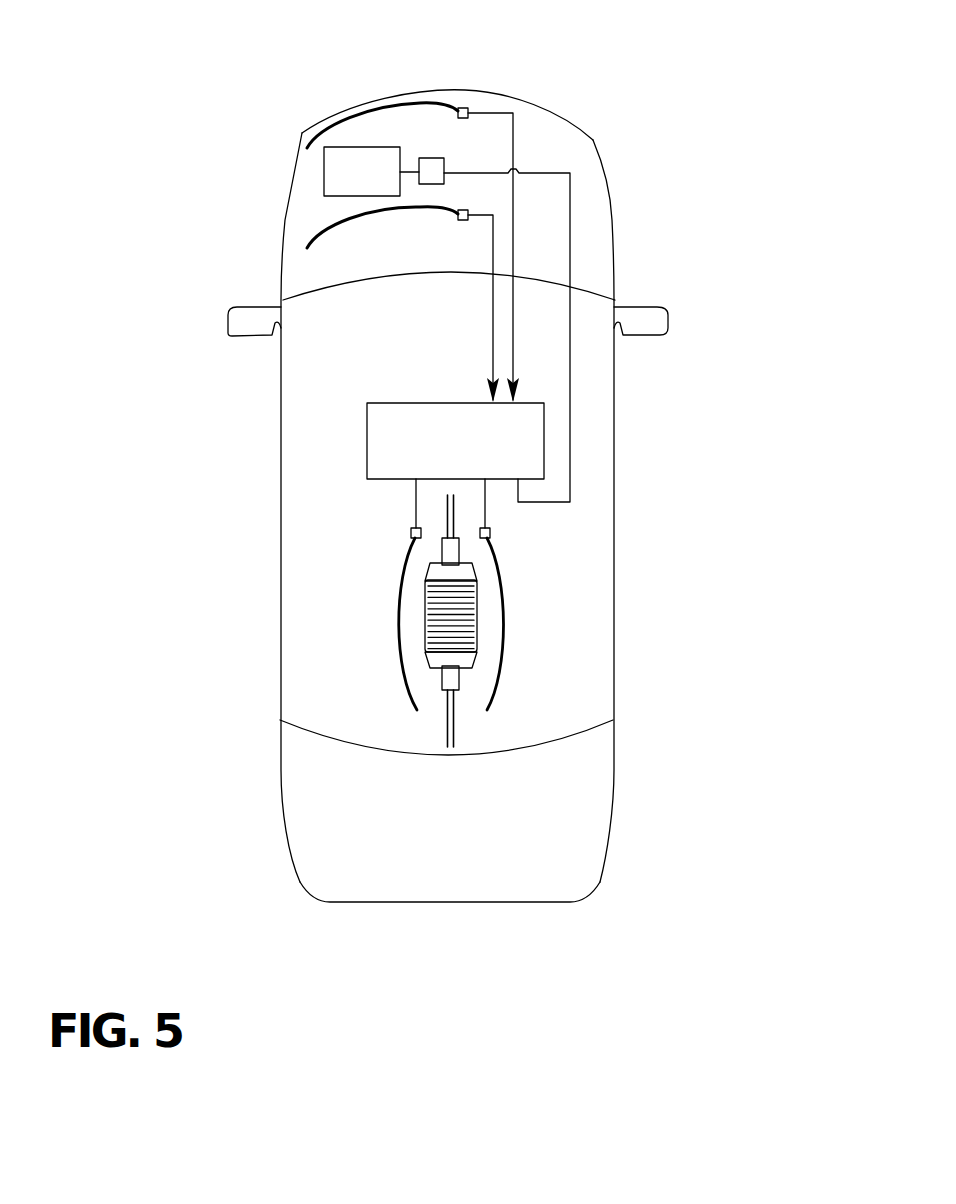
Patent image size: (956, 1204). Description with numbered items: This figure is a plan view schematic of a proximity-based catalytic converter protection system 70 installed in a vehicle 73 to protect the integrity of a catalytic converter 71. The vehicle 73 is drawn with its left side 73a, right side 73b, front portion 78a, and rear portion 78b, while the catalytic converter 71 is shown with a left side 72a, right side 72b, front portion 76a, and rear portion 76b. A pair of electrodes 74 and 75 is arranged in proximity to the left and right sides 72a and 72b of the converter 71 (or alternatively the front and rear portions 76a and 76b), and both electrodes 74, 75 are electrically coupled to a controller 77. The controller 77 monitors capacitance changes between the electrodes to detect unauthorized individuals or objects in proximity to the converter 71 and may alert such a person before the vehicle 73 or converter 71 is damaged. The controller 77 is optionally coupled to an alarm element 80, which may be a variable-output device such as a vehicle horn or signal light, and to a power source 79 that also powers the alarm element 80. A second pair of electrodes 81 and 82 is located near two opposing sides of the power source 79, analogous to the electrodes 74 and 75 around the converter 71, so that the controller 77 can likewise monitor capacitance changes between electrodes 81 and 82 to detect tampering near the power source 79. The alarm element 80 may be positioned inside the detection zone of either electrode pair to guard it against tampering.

The proximity-based catalytic converter protection system 70 is at (762, 287).
The catalytic converter 71 is at (466, 671).
The left side 72a is at (422, 620).
The right side 72b is at (480, 627).
The vehicle 73 is at (614, 215).
The left side 73a is at (278, 353).
The right side 73b is at (618, 373).
The electrode 74 is at (400, 585).
The electrode 75 is at (503, 592).
The front portion 76a is at (438, 553).
The rear portion 76b is at (440, 672).
The controller 77 is at (467, 458).
The front portion 78a is at (499, 93).
The rear portion 78b is at (500, 908).
The power source 79 is at (324, 178).
The alarm element 80 is at (433, 168).
The electrode 81 is at (355, 115).
The electrode 82 is at (347, 223).